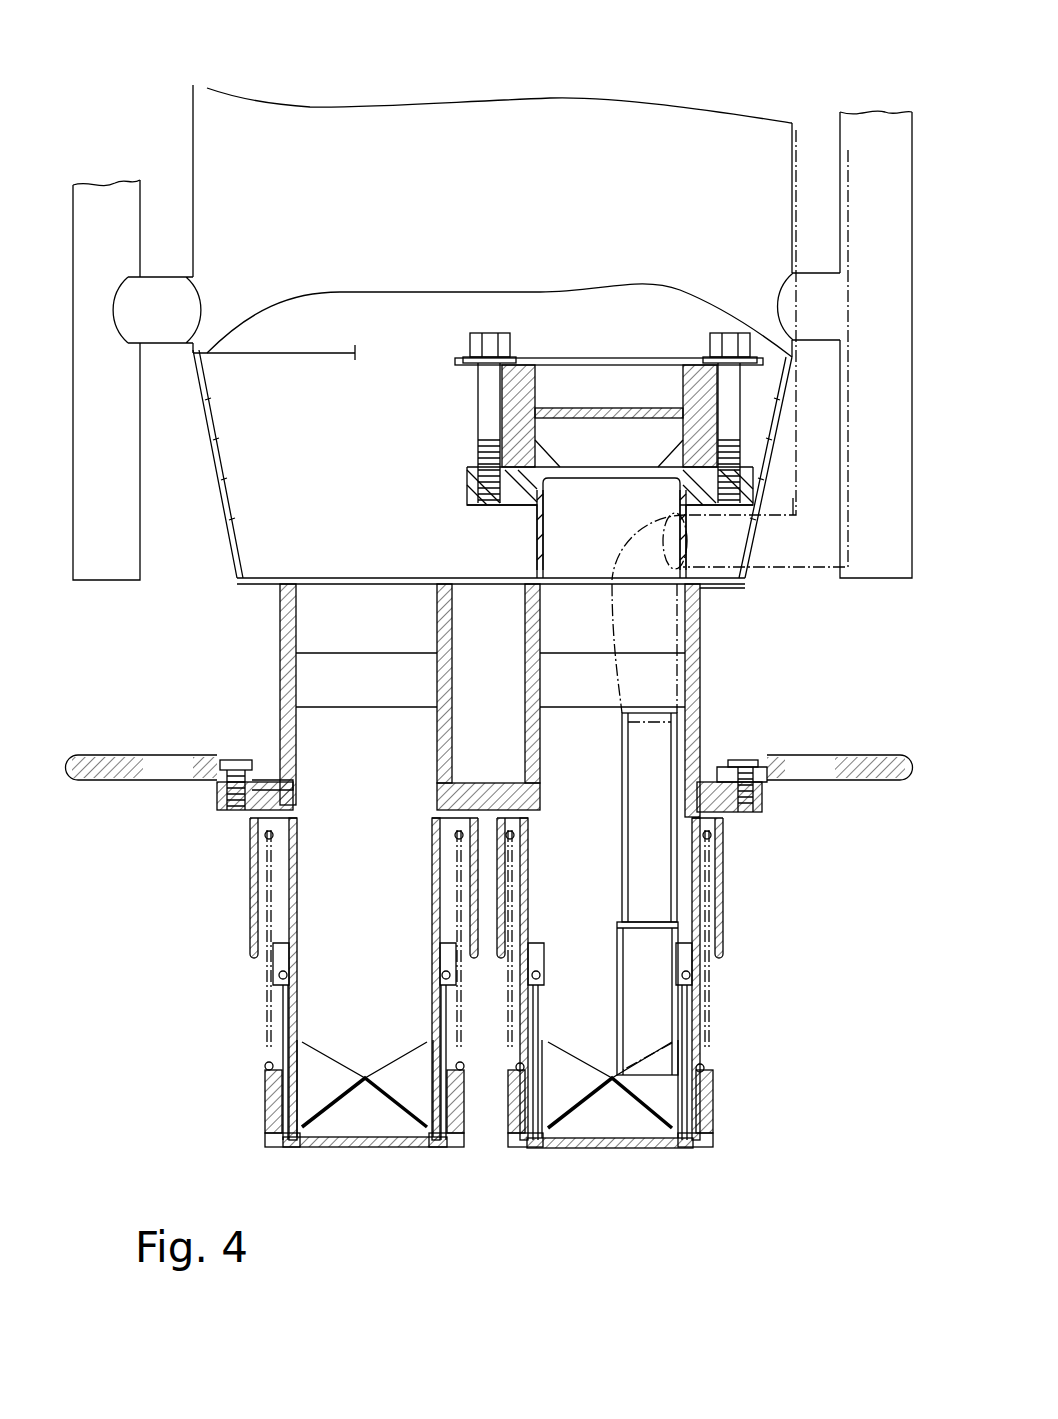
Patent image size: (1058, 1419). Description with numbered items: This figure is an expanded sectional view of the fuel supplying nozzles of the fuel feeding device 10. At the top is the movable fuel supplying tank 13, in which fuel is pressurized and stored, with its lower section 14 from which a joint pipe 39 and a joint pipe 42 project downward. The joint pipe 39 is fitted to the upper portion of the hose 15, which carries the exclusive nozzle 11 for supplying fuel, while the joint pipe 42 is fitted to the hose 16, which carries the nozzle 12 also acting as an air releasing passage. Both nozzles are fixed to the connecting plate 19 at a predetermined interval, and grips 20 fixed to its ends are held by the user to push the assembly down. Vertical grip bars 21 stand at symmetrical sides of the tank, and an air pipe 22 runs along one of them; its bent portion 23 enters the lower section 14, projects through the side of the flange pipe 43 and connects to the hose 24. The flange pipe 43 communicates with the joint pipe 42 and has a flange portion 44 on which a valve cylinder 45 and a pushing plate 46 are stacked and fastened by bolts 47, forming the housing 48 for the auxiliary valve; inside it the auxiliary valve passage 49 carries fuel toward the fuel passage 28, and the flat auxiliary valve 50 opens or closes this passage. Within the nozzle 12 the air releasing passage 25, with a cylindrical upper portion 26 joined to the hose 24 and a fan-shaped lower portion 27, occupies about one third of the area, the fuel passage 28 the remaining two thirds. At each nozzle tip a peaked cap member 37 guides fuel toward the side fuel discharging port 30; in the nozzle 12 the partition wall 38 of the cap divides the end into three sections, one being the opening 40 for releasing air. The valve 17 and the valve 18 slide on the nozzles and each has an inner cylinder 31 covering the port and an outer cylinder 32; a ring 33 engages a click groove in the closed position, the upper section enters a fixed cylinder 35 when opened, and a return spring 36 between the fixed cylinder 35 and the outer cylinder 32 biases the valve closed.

The fuel feeding device 10 is at (553, 65).
The exclusive nozzle for supplying fuel 11 is at (297, 865).
The nozzle also acting as an air releasing passage 12 is at (535, 740).
The fuel supplying tank 13 is at (312, 110).
The lower section 14 is at (232, 497).
The hose 15 is at (280, 692).
The hose 16 is at (705, 690).
The valve 17 is at (256, 1062).
The valve 18 is at (718, 1075).
The connecting plate 19 is at (220, 800).
The grip 20 is at (113, 760).
The grip bar 21 is at (120, 192).
The air pipe 22 is at (795, 118).
The bent portion 23 is at (802, 560).
The hose 24 is at (702, 612).
The air releasing passage 25 is at (540, 920).
The cylindrical upper portion 26 is at (632, 850).
The lower portion 27 is at (628, 960).
The fuel passage 28 is at (600, 801).
The fuel discharging port 30 is at (266, 1068).
The inner cylinder 31 is at (283, 1140).
The outer cylinder 32 is at (268, 1118).
The ring 33 is at (297, 965).
The fixed cylinder 35 is at (250, 905).
The return spring 36 is at (263, 990).
The cap member 37 is at (362, 1135).
The partition wall 38 is at (568, 1060).
The joint pipe 39 is at (290, 597).
The opening for releasing air 40 is at (700, 1047).
The joint pipe 42 is at (670, 652).
The flange pipe 43 is at (537, 537).
The flange portion 44 is at (468, 487).
The valve cylinder 45 is at (525, 455).
The pushing plate 46 is at (460, 360).
The bolt 47 is at (472, 340).
The housing for auxiliary valve 48 is at (542, 335).
The auxiliary valve passage 49 is at (600, 380).
The auxiliary valve 50 is at (600, 420).